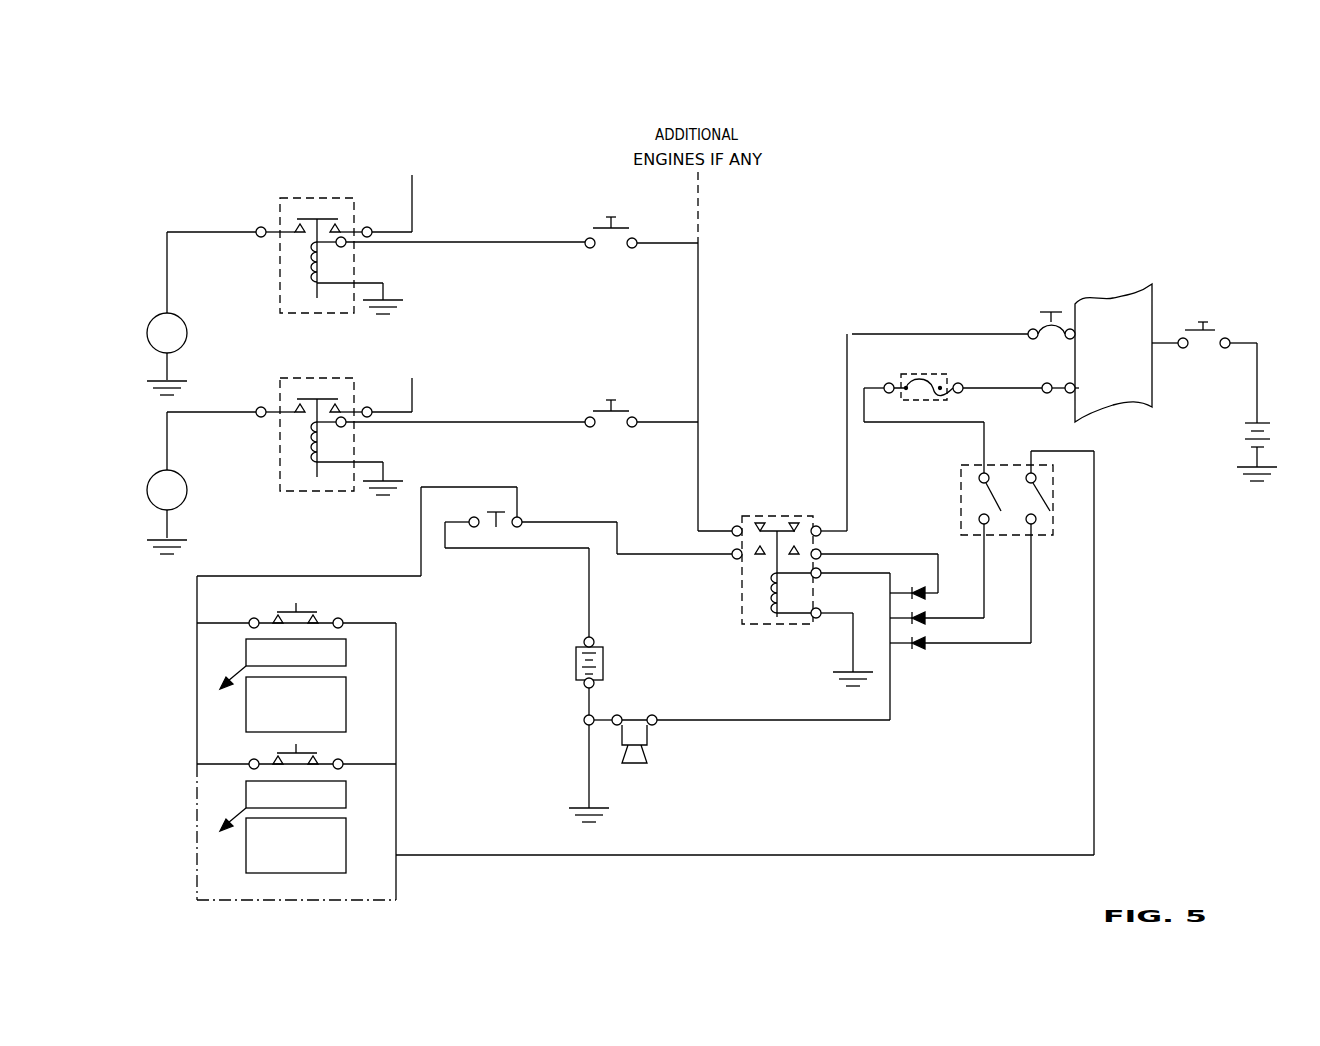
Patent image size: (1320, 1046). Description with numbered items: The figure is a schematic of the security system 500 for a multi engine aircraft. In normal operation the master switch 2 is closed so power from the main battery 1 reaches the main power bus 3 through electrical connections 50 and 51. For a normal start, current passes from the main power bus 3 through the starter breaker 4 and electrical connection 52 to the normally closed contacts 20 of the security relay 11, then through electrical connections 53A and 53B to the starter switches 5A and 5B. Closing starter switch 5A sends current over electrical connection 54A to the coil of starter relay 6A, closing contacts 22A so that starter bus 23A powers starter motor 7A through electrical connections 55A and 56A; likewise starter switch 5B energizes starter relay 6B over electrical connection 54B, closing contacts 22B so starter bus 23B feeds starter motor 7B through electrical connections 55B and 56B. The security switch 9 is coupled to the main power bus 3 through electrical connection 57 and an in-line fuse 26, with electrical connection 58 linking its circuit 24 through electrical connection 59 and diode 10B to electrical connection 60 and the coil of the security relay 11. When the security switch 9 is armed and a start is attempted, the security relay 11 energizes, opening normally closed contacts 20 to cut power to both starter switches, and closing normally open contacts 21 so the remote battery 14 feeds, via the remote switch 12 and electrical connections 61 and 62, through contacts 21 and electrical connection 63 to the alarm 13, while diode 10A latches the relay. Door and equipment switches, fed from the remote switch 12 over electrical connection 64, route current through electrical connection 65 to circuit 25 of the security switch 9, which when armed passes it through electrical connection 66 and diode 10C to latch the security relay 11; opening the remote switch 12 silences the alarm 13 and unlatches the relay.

The main battery 1 is at (1265, 440).
The master switch 2 is at (1215, 330).
The main power bus 3 is at (1113, 340).
The starter breaker 4 is at (1042, 312).
The starter switch 5A is at (600, 228).
The starter switch 5B is at (600, 410).
The starter relay 6A is at (280, 277).
The starter relay 6B is at (280, 457).
The starter motor 7A is at (147, 313).
The starter motor 7B is at (147, 483).
The security switch 9 is at (957, 494).
The diode 10A is at (911, 592).
The diode 10B is at (911, 616).
The diode 10C is at (910, 646).
The security relay 11 is at (820, 627).
The remote switch 12 is at (488, 512).
The alarm 13 is at (650, 740).
The remote battery 14 is at (575, 664).
The normally closed contacts 20 is at (760, 516).
The normally open contacts 21 is at (758, 558).
The contacts 22A is at (296, 229).
The contacts 22B is at (296, 409).
The starter bus 23A is at (427, 146).
The starter bus 23B is at (427, 348).
The circuit 24 is at (979, 519).
The circuit 25 is at (1036, 519).
The in-line fuse 26 is at (916, 370).
The electrical connection 50 is at (1261, 383).
The electrical connection 51 is at (1165, 323).
The electrical connection 52 is at (924, 414).
The electrical connection 53A is at (667, 225).
The electrical connection 53B is at (667, 405).
The electrical connection 54A is at (465, 225).
The electrical connection 54B is at (465, 405).
The electrical connection 55A is at (412, 201).
The electrical connection 55B is at (412, 393).
The electrical connection 56A is at (231, 218).
The electrical connection 56B is at (231, 398).
The electrical connection 57 is at (1021, 375).
The electrical connection 58 is at (924, 430).
The electrical connection 59 is at (954, 571).
The electrical connection 60 is at (773, 646).
The electrical connection 61 is at (517, 579).
The electrical connection 62 is at (627, 521).
The electrical connection 63 is at (858, 554).
The electrical connection 64 is at (357, 531).
The electrical connection 65 is at (662, 686).
The electrical connection 66 is at (978, 604).
The security system 500 is at (1121, 157).